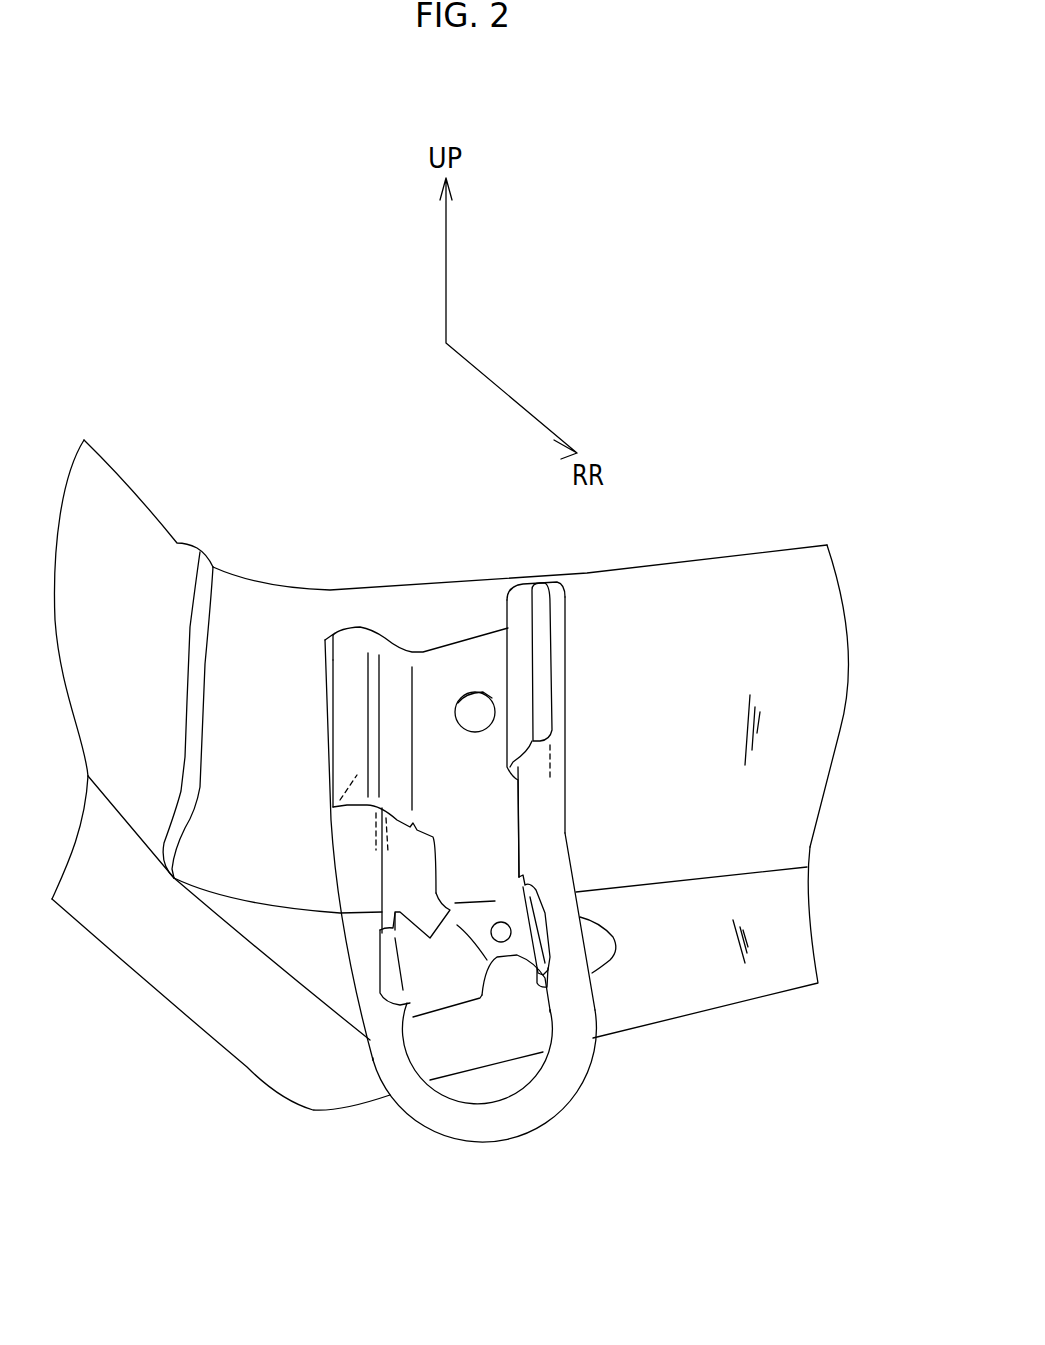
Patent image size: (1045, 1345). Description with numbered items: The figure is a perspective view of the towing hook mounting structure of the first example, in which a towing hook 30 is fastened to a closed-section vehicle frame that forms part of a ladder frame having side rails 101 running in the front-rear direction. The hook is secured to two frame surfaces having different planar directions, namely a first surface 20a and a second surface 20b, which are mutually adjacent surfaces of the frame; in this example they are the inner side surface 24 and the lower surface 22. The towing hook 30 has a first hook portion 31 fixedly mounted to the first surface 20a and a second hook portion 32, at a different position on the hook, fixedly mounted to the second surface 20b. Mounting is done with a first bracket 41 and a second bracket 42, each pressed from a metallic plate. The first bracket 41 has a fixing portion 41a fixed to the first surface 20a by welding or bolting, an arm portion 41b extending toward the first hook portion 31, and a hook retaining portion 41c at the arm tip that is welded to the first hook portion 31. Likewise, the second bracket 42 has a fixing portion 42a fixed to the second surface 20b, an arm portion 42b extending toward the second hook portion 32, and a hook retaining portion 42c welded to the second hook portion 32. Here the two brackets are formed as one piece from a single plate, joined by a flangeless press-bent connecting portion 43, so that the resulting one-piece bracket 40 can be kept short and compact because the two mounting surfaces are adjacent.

The first surface 20a is at (813, 618).
The second surface 20b is at (782, 917).
The lower surface 22 is at (798, 963).
The inner side surface 24 is at (830, 666).
The towing hook 30 is at (457, 1151).
The first hook portion 31 is at (553, 653).
The second hook portion 32 is at (565, 925).
The bracket 40 is at (372, 624).
The first bracket 41 is at (470, 760).
The fixing portion 41a is at (473, 657).
The arm portion 41b is at (413, 827).
The hook retaining portion 41c is at (355, 652).
The second bracket 42 is at (487, 913).
The fixing portion 42a is at (487, 957).
The arm portion 42b is at (596, 949).
The hook retaining portion 42c is at (538, 950).
The connecting portion 43 is at (482, 895).
The side rail 101 is at (133, 932).